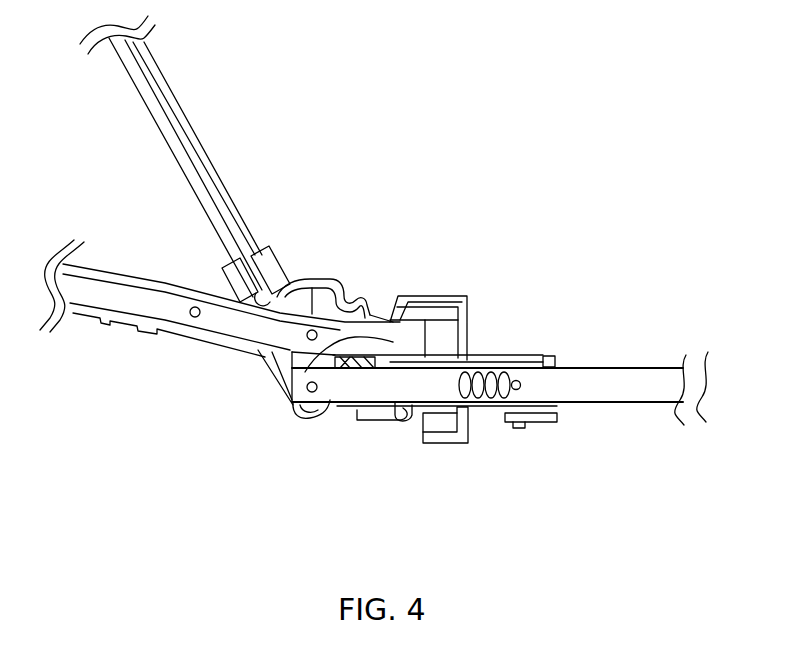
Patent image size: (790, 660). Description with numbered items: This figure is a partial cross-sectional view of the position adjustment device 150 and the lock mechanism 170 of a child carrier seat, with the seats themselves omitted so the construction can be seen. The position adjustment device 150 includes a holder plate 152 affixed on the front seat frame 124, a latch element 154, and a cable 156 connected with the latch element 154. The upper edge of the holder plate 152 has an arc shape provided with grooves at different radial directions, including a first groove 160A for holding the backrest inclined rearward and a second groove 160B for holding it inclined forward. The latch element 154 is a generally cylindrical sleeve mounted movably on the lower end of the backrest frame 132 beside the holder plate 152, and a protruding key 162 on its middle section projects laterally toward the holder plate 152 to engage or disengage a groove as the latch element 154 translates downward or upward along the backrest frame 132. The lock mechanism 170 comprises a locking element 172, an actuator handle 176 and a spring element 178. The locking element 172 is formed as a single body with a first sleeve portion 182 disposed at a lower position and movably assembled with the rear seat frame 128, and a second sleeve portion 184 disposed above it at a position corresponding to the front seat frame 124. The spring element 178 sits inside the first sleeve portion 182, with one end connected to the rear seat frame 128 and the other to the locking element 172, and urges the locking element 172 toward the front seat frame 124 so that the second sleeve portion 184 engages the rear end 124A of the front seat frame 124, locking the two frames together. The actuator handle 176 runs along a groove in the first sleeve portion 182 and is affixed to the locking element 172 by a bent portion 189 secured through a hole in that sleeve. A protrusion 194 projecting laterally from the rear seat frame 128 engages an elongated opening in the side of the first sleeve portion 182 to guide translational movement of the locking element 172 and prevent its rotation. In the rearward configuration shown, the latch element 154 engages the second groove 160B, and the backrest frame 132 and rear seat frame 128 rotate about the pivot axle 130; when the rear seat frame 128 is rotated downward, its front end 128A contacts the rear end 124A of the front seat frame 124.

The front seat frame 124 is at (100, 295).
The rear end of the front seat frame 124A is at (293, 378).
The rear seat frame 128 is at (675, 368).
The front end of the rear seat frame 128A is at (297, 413).
The pivot axle 130 is at (316, 392).
The backrest frame 132 is at (178, 107).
The position adjustment device 150 is at (243, 395).
The holder plate 152 is at (311, 288).
The latch element 154 is at (222, 281).
The cable 156 is at (190, 162).
The first groove 160A is at (355, 292).
The second groove 160B is at (271, 262).
The protruding key 162 is at (267, 250).
The lock mechanism 170 is at (542, 228).
The locking element 172 is at (448, 447).
The actuator handle 176 is at (660, 405).
The spring element 178 is at (490, 405).
The first sleeve portion 182 is at (528, 357).
The second sleeve portion 184 is at (445, 325).
The bent portion 189 is at (518, 425).
The protrusion 194 is at (521, 384).